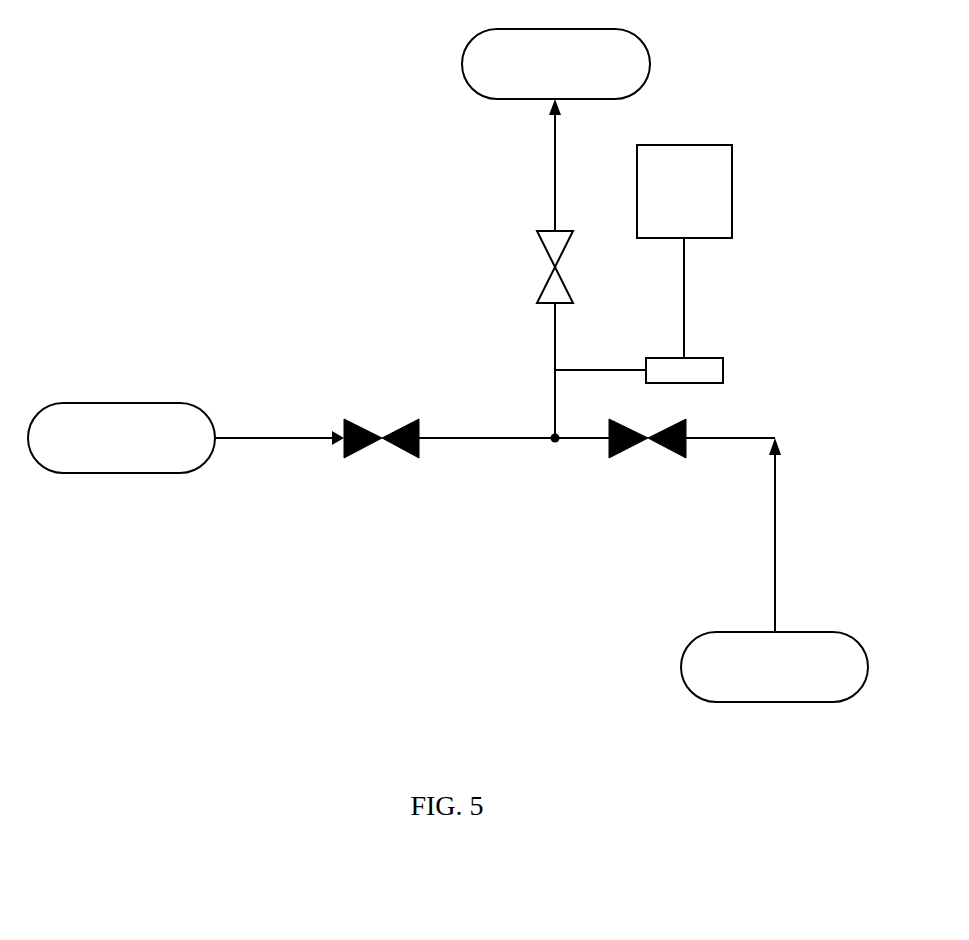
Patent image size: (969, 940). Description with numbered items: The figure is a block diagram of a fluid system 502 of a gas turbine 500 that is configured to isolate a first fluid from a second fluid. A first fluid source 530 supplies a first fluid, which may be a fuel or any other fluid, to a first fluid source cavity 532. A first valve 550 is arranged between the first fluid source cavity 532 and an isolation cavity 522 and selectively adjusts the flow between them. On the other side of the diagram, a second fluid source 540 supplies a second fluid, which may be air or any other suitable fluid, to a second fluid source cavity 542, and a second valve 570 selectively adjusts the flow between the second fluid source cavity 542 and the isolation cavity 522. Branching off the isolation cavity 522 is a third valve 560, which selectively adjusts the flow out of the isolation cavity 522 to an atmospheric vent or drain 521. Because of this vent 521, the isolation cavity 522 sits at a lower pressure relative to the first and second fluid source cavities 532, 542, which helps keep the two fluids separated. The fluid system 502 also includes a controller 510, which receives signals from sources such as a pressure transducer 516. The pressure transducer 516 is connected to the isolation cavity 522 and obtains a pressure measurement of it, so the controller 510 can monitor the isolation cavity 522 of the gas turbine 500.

The gas turbine 500 is at (266, 138).
The fluid system 502 is at (386, 340).
The controller 510 is at (732, 145).
The pressure transducer 516 is at (723, 370).
The atmospheric vent or drain 521 is at (556, 130).
The isolation cavity 522 is at (555, 353).
The first fluid source 530 is at (121, 438).
The first fluid source cavity 532 is at (278, 438).
The second fluid source 540 is at (774, 667).
The second fluid source cavity 542 is at (775, 553).
The first valve 550 is at (344, 419).
The third valve 560 is at (537, 230).
The second valve 570 is at (609, 455).